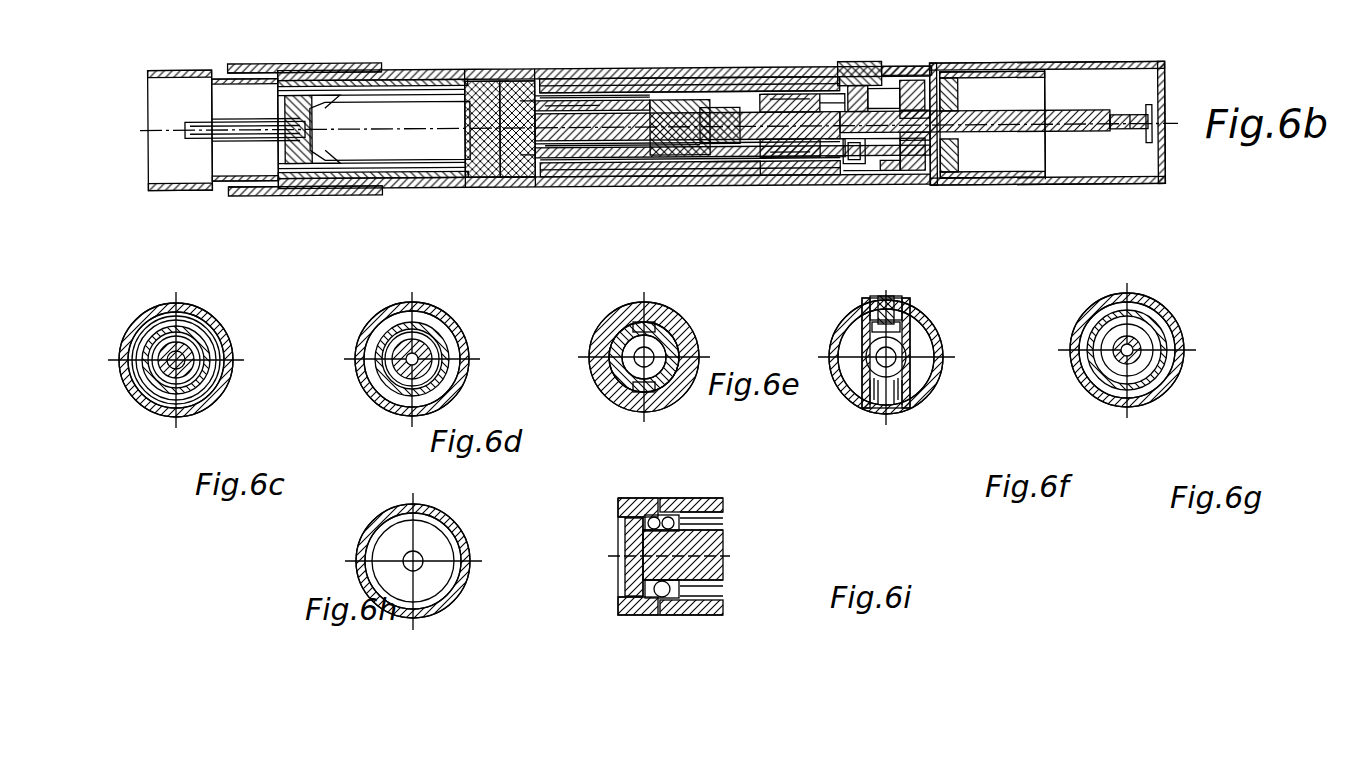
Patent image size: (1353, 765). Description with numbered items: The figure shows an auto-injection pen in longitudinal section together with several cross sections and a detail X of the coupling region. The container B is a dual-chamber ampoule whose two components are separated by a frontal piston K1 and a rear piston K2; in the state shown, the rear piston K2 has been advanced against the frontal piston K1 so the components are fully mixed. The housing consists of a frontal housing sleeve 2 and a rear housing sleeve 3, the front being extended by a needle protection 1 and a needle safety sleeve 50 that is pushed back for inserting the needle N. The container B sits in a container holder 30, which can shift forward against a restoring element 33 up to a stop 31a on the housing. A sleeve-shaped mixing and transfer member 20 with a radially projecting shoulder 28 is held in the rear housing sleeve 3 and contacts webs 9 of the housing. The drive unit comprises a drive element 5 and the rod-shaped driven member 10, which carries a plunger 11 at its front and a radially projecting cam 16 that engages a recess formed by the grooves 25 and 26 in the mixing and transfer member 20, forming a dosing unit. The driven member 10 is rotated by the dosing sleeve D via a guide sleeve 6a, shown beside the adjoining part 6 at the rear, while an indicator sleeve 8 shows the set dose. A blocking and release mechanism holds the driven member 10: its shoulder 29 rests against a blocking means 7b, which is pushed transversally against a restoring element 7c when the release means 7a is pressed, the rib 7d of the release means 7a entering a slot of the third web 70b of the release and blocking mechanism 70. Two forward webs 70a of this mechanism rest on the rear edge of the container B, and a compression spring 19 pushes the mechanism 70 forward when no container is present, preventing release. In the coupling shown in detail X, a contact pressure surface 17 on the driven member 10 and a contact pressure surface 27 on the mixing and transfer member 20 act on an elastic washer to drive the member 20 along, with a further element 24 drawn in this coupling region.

In FIG. 6B, the needle safety sleeve 50 is at (171, 67).
In FIG. 6B, the needle N is at (242, 127).
In FIG. 6B, the container B is at (403, 97).
In FIG. 6C, the container B is at (128, 382).
In FIG. 6B, the frontal piston K1 is at (473, 68).
In FIG. 6B, the rear piston K2 is at (508, 68).
In FIG. 6B, the stop 31a is at (303, 193).
In FIG. 6B, the needle protection 1 is at (400, 187).
In FIG. 6B, the frontal housing sleeve 2 is at (440, 173).
In FIG. 6B, the restoring element 33 is at (482, 177).
In FIG. 6B, the plunger 11 is at (523, 140).
In FIG. 6I, the plunger 11 is at (632, 565).
In FIG. 6B, the driven member 10 is at (575, 133).
In FIG. 6C, the driven member 10 is at (172, 405).
In FIG. 6D, the driven member 10 is at (395, 375).
In FIG. 6F, the driven member 10 is at (895, 360).
In FIG. 6G, the driven member 10 is at (1120, 366).
In FIG. 6I, the driven member 10 is at (725, 558).
In FIG. 6B, the cam 16 is at (682, 103).
In FIG. 6D, the cam 16 is at (395, 330).
In FIG. 6B, the longer groove 26 is at (587, 78).
In FIG. 6C, the longer groove 26 is at (183, 330).
In FIG. 6B, the shorter groove 25 is at (635, 100).
In FIG. 6C, the shorter groove 25 is at (190, 335).
In FIG. 6B, the mixing and transfer member 20 is at (645, 147).
In FIG. 6C, the mixing and transfer member 20 is at (165, 395).
In FIG. 6D, the mixing and transfer member 20 is at (380, 400).
In FIG. 6E, the mixing and transfer member 20 is at (680, 342).
In FIG. 6I, the mixing and transfer member 20 is at (725, 603).
In FIG. 6B, the container holder 30 is at (703, 160).
In FIG. 6C, the container holder 30 is at (130, 357).
In FIG. 6B, the shoulder 28 is at (723, 183).
In FIG. 6B, the rear housing sleeve 3 is at (598, 187).
In FIG. 6C, the rear housing sleeve 3 is at (200, 405).
In FIG. 6E, the rear housing sleeve 3 is at (603, 325).
In FIG. 6F, the rear housing sleeve 3 is at (925, 385).
In FIG. 6G, the rear housing sleeve 3 is at (1160, 310).
In FIG. 6B, the release and blocking mechanism 70 is at (795, 160).
In FIG. 6B, the drive element 5 is at (825, 97).
In FIG. 6B, the compression spring 19 is at (829, 102).
In FIG. 6B, the release means 7a is at (847, 63).
In FIG. 6F, the release means 7a is at (897, 300).
In FIG. 6B, the blocking means 7b is at (873, 72).
In FIG. 6F, the blocking means 7b is at (905, 333).
In FIG. 6B, the restoring element 7c is at (870, 147).
In FIG. 6F, the restoring element 7c is at (885, 410).
In FIG. 6F, the rib 7d is at (862, 310).
In FIG. 6B, the indicator sleeve 8 is at (917, 82).
In FIG. 6G, the indicator sleeve 8 is at (1142, 372).
In FIG. 6B, the webs 9 is at (833, 177).
In FIG. 6B, the shoulder 29 is at (920, 180).
In FIG. 6B, the end wall 6 is at (958, 74).
In FIG. 6B, the guide sleeve 6a is at (1015, 74).
In FIG. 6H, the guide sleeve 6a is at (362, 580).
In FIG. 6B, the dosing sleeve D is at (1140, 65).
In FIG. 6H, the dosing sleeve D is at (360, 535).
In FIG. 6E, the webs 70a is at (600, 386).
In FIG. 6F, the third web 70b is at (900, 332).
In FIG. 6G, the third web 70b is at (1135, 320).
In FIG. 6I, the detail X is at (587, 520).
In FIG. 6I, the contact pressure surface 27 is at (660, 510).
In FIG. 6I, the contact pressure surface 17 is at (672, 505).
In FIG. 6I, the seal 24 is at (690, 508).